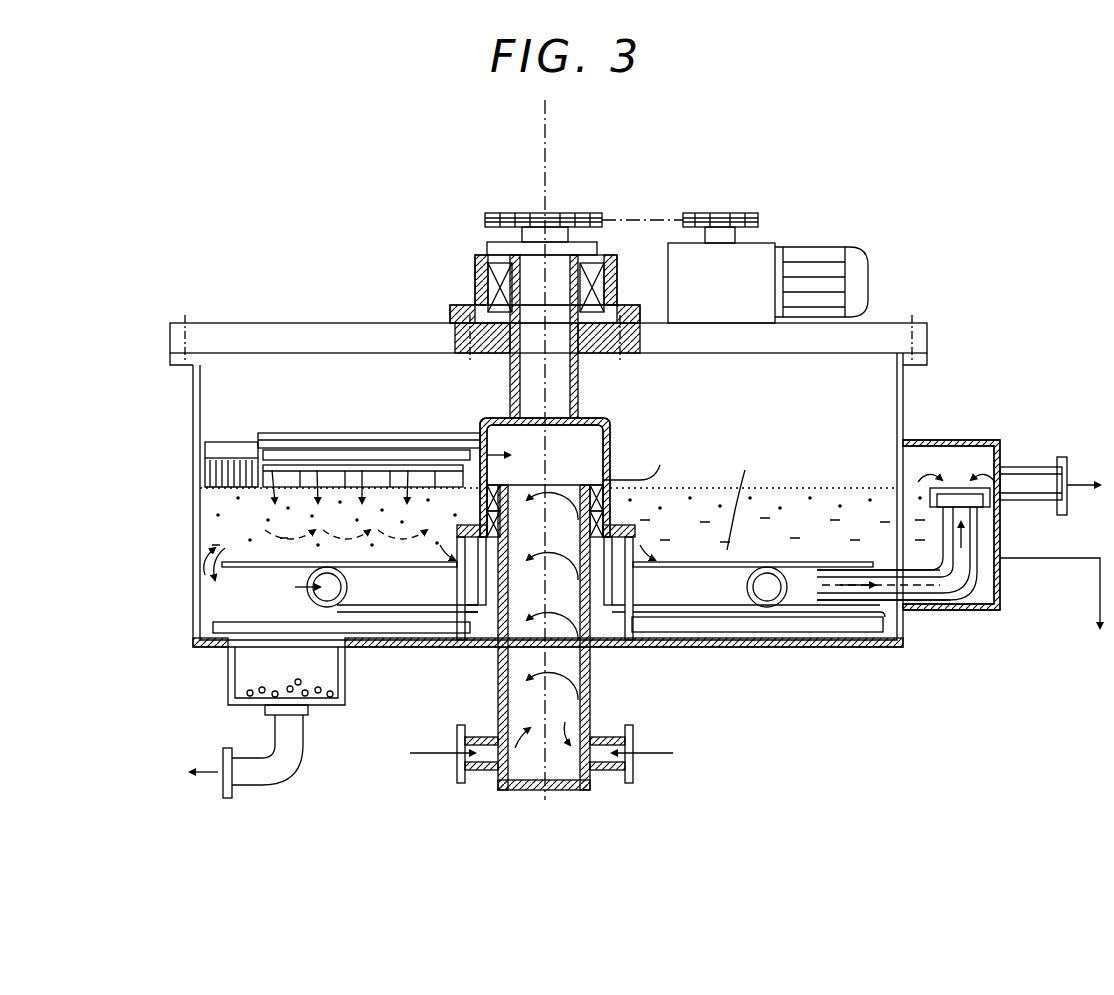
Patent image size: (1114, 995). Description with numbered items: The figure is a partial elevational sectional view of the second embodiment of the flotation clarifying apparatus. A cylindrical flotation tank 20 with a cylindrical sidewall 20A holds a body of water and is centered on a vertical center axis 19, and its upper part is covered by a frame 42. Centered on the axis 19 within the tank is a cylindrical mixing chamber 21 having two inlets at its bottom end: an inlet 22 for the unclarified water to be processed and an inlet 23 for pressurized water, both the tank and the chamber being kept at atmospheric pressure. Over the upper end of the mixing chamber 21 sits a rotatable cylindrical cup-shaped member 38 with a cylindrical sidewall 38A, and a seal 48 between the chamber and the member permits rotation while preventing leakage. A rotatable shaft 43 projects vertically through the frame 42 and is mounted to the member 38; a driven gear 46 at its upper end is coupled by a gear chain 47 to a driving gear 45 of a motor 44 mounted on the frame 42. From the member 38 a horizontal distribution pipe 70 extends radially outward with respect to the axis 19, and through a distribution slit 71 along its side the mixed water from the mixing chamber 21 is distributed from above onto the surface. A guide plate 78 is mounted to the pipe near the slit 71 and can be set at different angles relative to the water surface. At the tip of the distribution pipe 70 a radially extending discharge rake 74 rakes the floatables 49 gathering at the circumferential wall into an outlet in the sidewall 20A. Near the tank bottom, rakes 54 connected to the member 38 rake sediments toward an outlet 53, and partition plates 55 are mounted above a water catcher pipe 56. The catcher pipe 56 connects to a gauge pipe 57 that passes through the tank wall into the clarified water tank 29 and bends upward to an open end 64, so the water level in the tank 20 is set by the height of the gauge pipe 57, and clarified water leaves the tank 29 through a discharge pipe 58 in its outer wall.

The center axis 19 is at (548, 118).
The flotation tank 20 is at (194, 420).
The cylindrical sidewall 20A is at (194, 566).
The mixing chamber 21 is at (528, 792).
The inlet 22 is at (472, 727).
The inlet 23 is at (610, 785).
The clarified water tank 29 is at (980, 438).
The cup-shaped member 38 is at (612, 437).
The cylindrical sidewall 38A is at (516, 469).
The frame 42 is at (245, 323).
The rotatable shaft 43 is at (582, 360).
The motor 44 is at (763, 258).
The driving gear 45 is at (746, 223).
The driven gear 46 is at (493, 217).
The gear chain 47 is at (658, 219).
The seal 48 is at (640, 485).
The floatables 49 is at (822, 487).
The outlet 53 is at (233, 680).
The rakes 54 is at (215, 626).
The partition plates 55 is at (172, 533).
The water catcher pipe 56 is at (335, 605).
The gauge pipe 57 is at (985, 520).
The discharge pipe 58 is at (1041, 466).
The open end 64 is at (930, 452).
The distribution pipe 70 is at (294, 435).
The distribution slit 71 is at (420, 462).
The discharge rake 74 is at (206, 462).
The guide plate 78 is at (354, 465).